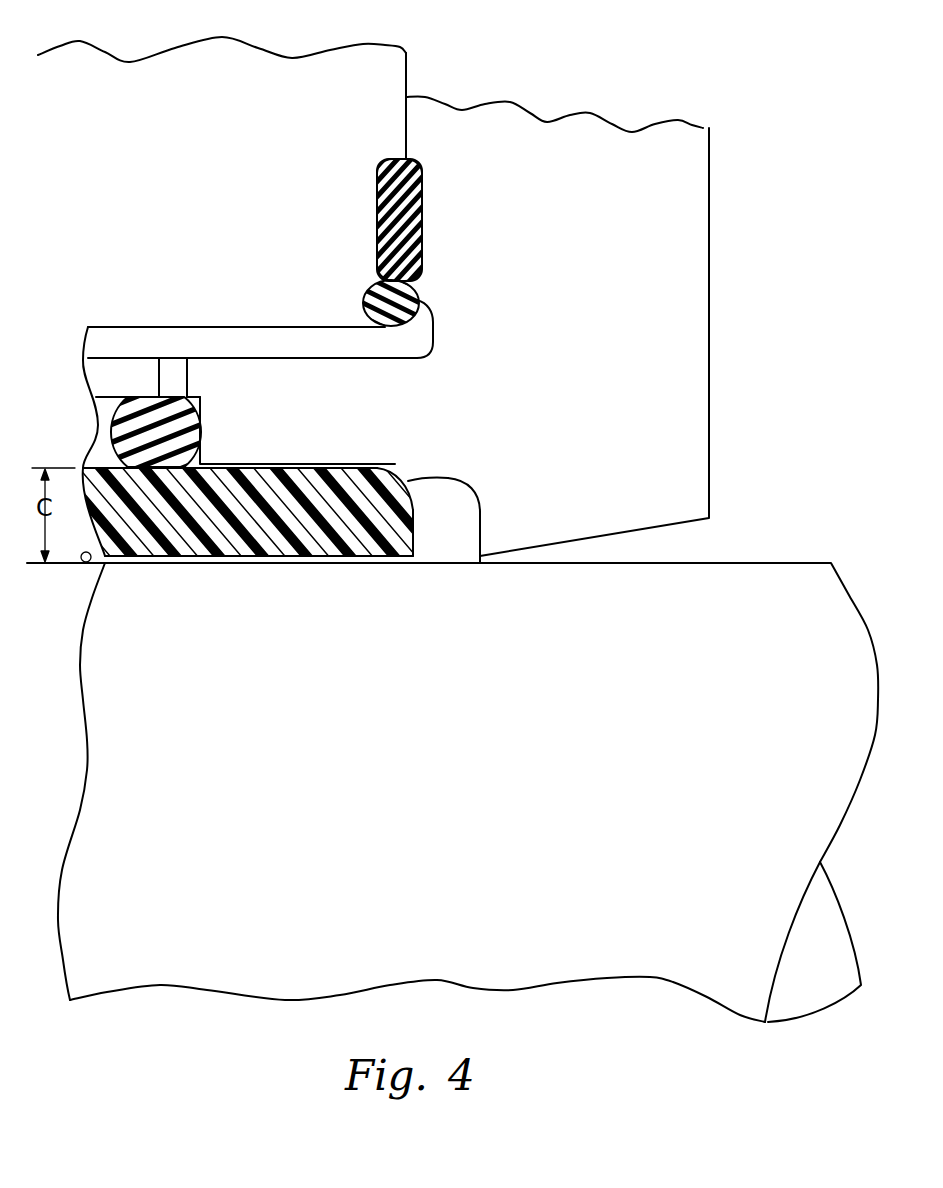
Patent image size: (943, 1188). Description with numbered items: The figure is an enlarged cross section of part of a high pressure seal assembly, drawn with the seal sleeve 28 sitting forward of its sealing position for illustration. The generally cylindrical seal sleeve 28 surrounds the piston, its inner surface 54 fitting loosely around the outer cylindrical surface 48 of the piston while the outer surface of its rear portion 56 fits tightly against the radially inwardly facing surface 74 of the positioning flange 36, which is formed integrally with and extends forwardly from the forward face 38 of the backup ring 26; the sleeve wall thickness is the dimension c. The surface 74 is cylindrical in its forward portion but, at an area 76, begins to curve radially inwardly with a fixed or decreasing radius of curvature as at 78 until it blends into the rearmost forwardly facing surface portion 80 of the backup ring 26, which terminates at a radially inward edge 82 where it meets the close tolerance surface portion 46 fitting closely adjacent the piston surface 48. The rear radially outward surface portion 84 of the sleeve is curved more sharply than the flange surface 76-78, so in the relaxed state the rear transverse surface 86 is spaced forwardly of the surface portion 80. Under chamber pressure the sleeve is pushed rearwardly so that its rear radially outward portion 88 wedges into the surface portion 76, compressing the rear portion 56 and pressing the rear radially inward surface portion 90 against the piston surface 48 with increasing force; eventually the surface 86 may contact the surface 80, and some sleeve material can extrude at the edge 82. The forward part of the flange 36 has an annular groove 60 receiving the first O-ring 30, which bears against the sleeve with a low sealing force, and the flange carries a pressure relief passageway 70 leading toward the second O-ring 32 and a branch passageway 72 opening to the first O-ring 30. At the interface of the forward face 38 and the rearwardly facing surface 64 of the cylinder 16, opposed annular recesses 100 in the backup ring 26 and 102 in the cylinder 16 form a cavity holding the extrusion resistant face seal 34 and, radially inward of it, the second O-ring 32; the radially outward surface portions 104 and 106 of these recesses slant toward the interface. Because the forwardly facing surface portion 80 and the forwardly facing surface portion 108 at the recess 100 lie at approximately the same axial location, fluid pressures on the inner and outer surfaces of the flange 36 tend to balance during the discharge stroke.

The cylinder 16 is at (100, 62).
The backup ring 26 is at (552, 135).
The seal sleeve 28 is at (223, 465).
The first O-ring 30 is at (193, 415).
The second O-ring 32 is at (420, 295).
The face seal 34 is at (423, 231).
The positioning flange 36 is at (220, 365).
The forward face of the backup ring 38 is at (405, 137).
The forward cylindrical surface portion 46 is at (493, 564).
The outer cylindrical surface of the piston 48 is at (84, 562).
The inner surface of the seal sleeve 54 is at (178, 563).
The rear portion of the seal sleeve 56 is at (313, 543).
The annular groove 60 is at (122, 414).
The rearwardly facing surface of the cylinder 64 is at (408, 82).
The pressure relief passageway 70 is at (108, 340).
The branch passageway 72 is at (168, 368).
The radially inwardly facing circumferential surface 74 is at (312, 467).
The inwardly curving area 76 is at (410, 481).
The curved portion 78 is at (470, 500).
The forwardly facing surface portion 80 is at (477, 540).
The radially inward edge 82 is at (478, 565).
The rear radially outward surface portion 84 is at (412, 490).
The rear transverse surface portion 86 is at (414, 520).
The rear radially outward rear portion 88 is at (377, 467).
The rear radially inward surface portion 90 is at (393, 563).
The annular recess of the backup ring 100 is at (423, 179).
The annular recess of the cylinder 102 is at (377, 208).
The radially outward surface portion of the backup ring recess 104 is at (420, 170).
The radially outward surface portion of the cylinder recess 106 is at (398, 160).
The forwardly facing surface portion at the recess 108 is at (423, 274).